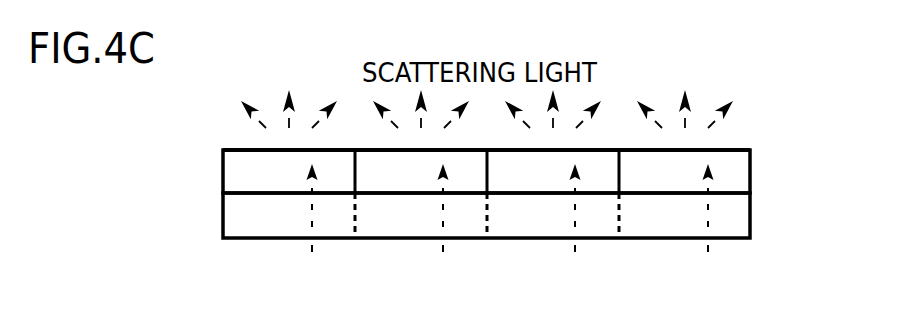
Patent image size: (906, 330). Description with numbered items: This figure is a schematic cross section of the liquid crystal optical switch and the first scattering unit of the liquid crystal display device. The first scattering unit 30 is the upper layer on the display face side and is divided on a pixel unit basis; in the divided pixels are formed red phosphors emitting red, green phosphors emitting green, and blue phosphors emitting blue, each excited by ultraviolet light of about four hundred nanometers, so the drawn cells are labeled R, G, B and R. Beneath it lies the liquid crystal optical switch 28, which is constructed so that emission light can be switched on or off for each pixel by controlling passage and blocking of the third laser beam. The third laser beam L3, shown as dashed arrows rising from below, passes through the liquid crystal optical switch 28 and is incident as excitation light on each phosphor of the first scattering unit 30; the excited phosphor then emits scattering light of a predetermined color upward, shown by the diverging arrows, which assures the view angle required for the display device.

The first scattering unit 30 is at (752, 172).
The liquid crystal optical switch 28 is at (752, 216).
The third laser beam L3 is at (510, 232).